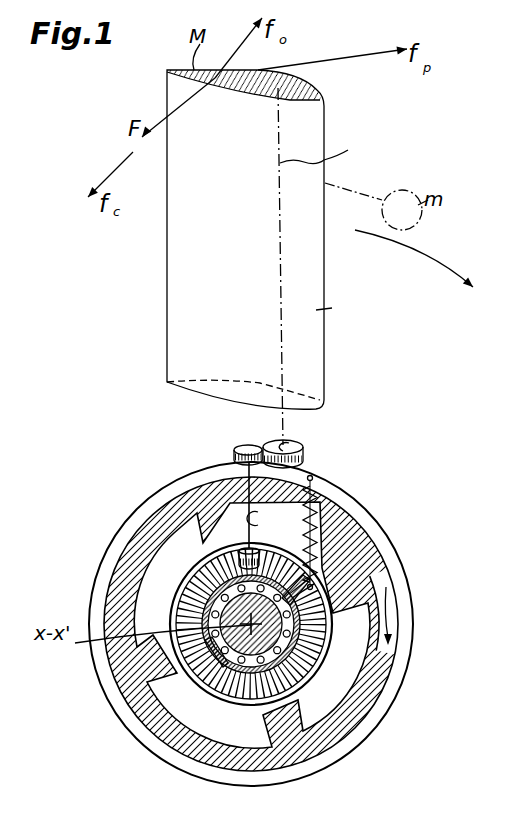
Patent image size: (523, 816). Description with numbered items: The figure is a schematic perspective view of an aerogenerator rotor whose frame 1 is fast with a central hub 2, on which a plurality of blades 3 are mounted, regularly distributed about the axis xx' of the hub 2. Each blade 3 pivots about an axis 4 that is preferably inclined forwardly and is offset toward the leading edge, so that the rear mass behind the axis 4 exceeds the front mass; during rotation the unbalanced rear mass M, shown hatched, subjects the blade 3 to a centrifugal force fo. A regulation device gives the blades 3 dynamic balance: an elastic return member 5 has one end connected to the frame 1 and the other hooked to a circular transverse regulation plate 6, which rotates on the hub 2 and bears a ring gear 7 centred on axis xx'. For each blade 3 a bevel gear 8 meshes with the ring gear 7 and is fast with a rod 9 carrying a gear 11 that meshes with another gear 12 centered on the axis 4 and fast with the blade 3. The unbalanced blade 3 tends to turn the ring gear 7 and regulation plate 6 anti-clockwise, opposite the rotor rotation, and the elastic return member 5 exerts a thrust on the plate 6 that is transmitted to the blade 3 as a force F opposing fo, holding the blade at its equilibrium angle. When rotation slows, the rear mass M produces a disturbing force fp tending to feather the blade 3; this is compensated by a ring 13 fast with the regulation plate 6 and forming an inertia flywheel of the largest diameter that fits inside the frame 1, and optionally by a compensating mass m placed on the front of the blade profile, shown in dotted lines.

The frame 1 is at (400, 592).
The central hub 2 is at (190, 725).
The blade 3 is at (259, 257).
The axis 4 is at (320, 151).
The elastic return member 5 is at (312, 542).
The regulation plate 6 is at (185, 682).
The ring gear 7 is at (190, 597).
The bevel gear 8 is at (210, 545).
The rod 9 is at (193, 477).
The gear 11 is at (246, 446).
The gear 12 is at (302, 445).
The ring 13 is at (362, 705).